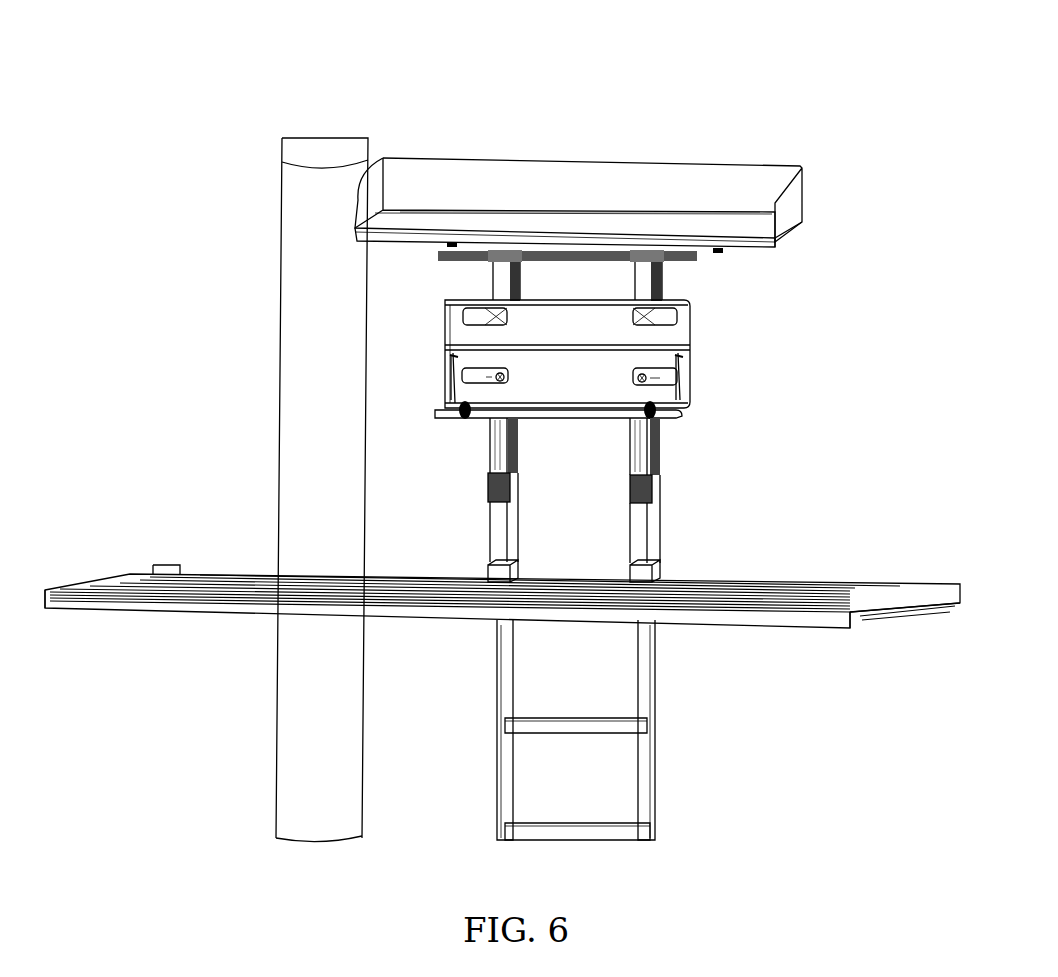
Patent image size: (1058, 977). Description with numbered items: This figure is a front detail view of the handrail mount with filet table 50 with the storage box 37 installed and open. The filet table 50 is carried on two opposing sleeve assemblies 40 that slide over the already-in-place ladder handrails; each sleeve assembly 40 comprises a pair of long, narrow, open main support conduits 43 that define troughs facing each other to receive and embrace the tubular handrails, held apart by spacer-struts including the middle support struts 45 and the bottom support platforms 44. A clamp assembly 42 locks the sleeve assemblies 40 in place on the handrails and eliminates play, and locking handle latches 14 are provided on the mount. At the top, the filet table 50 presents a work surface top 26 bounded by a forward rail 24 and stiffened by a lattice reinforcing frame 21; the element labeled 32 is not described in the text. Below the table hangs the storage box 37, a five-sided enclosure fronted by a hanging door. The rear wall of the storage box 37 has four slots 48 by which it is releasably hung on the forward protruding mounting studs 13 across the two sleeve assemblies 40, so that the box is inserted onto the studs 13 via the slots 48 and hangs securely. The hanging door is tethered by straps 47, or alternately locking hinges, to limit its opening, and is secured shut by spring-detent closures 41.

The filet table 50 is at (638, 229).
The tray 32 is at (790, 207).
The work surface top 26 is at (580, 218).
The lattice reinforcing frame 21 is at (773, 238).
The forward rail 24 is at (594, 262).
The locking handle latches 14 is at (497, 257).
The slots 48 is at (466, 305).
The storage box 37 is at (569, 339).
The straps 47 is at (454, 360).
The mounting stud 13 is at (636, 378).
The spring-detent closures 41 is at (648, 414).
The sleeve assemblies 40 is at (600, 500).
The middle support struts 45 is at (520, 481).
The clamp assembly 42 is at (630, 492).
The main support conduits 43 is at (640, 543).
The bottom support platforms 44 is at (485, 568).